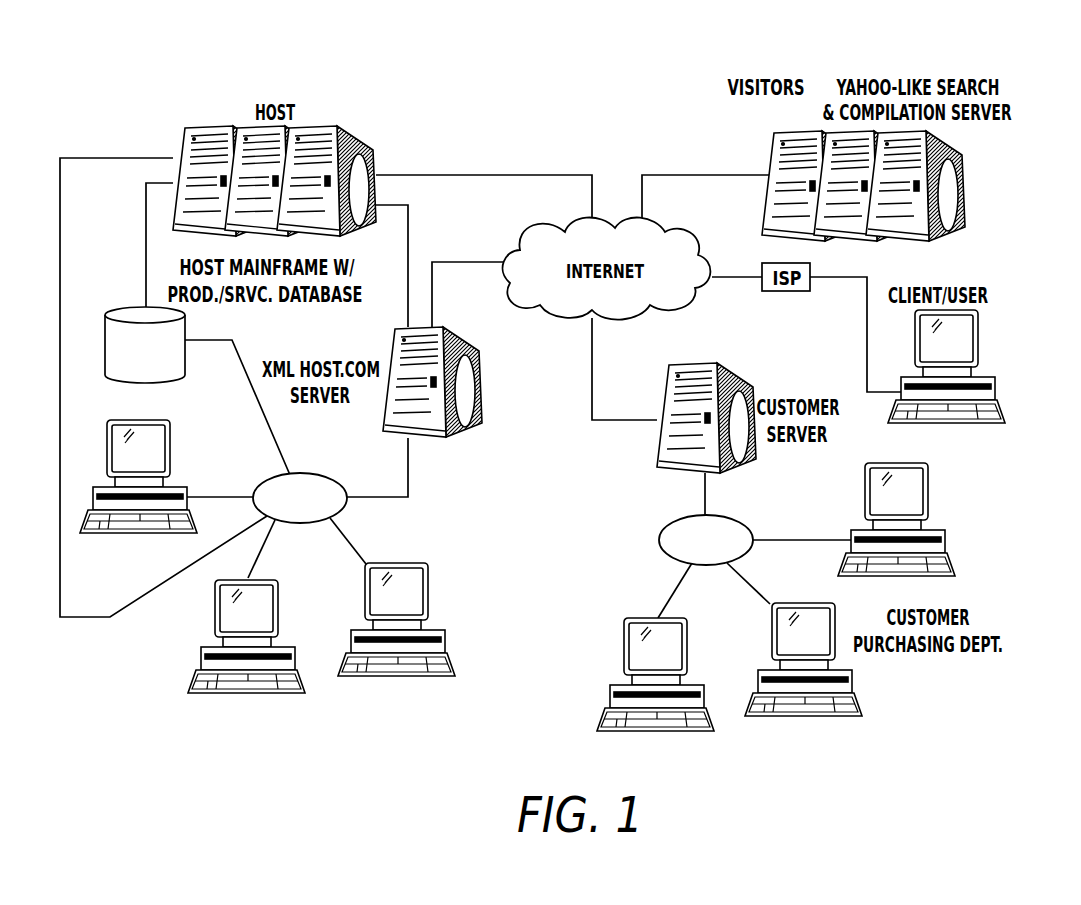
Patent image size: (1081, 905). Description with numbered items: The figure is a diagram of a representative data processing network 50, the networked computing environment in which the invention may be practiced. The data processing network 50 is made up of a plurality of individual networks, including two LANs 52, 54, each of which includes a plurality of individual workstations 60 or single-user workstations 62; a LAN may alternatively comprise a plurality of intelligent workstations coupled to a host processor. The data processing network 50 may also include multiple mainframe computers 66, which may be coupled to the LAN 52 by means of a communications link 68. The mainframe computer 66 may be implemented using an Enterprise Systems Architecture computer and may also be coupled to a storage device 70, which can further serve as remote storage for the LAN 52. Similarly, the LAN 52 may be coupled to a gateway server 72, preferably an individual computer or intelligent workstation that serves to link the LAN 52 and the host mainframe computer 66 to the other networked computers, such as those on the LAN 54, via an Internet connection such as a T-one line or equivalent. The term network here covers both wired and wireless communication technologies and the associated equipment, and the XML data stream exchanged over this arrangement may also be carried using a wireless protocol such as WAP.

The data processing network 50 is at (561, 90).
The LAN 52 is at (340, 510).
The LAN 54 is at (660, 538).
The individual workstation 60 is at (172, 462).
The single-user workstation 62 is at (993, 390).
The mainframe computer 66 is at (365, 113).
The communications link 68 is at (142, 597).
The storage device 70 is at (120, 305).
The gateway server 72 is at (475, 397).